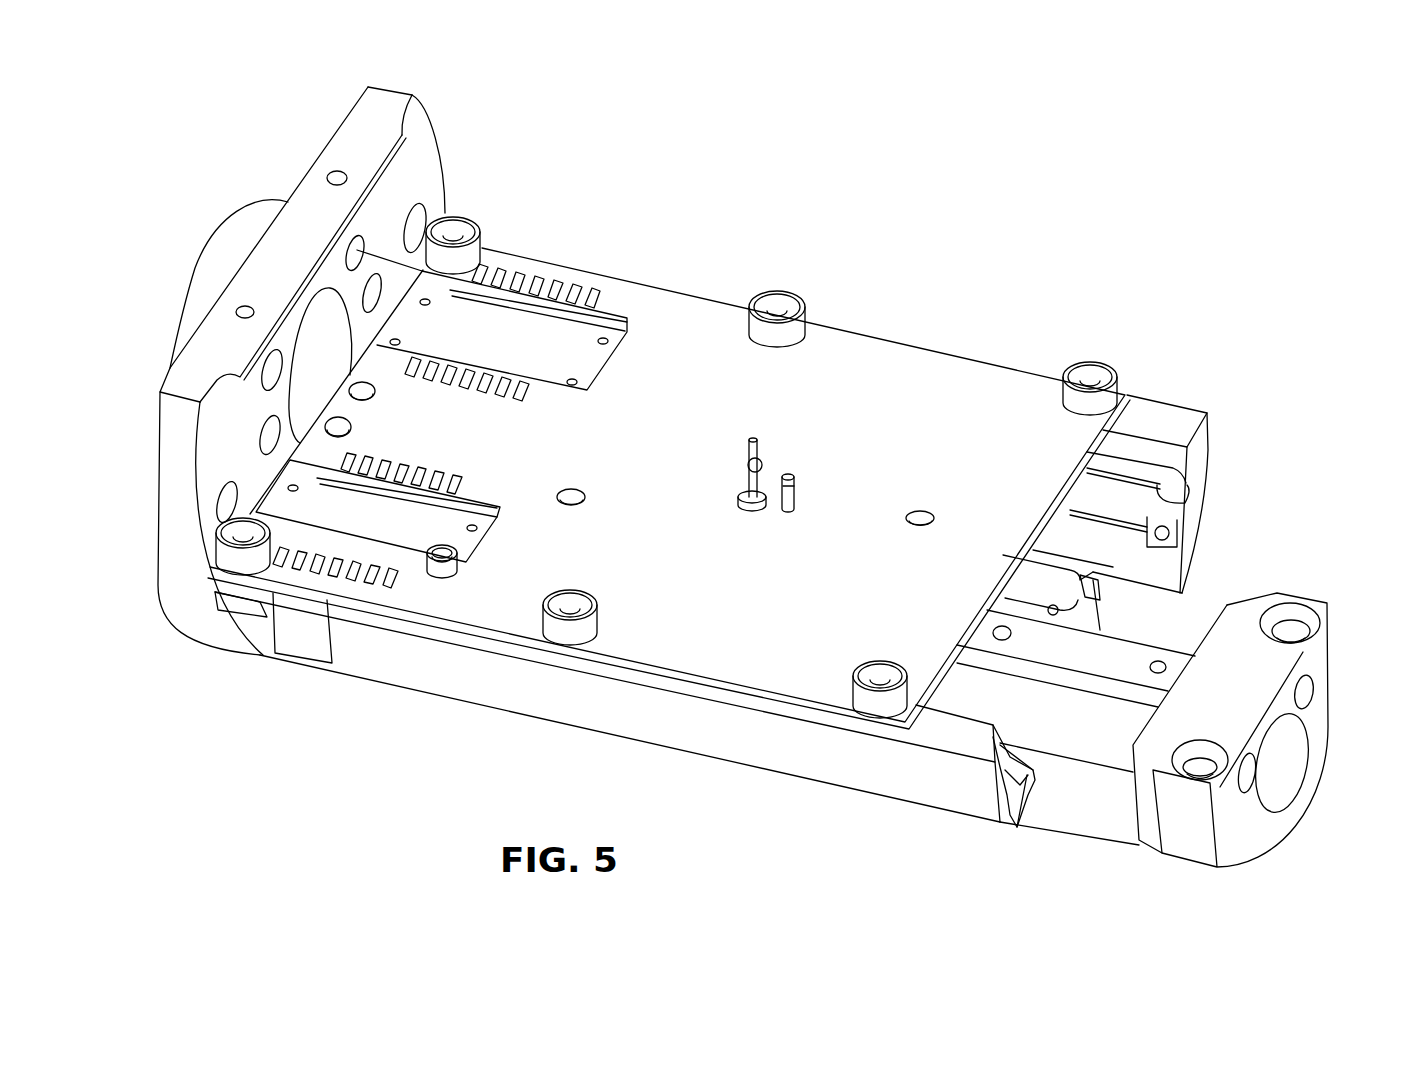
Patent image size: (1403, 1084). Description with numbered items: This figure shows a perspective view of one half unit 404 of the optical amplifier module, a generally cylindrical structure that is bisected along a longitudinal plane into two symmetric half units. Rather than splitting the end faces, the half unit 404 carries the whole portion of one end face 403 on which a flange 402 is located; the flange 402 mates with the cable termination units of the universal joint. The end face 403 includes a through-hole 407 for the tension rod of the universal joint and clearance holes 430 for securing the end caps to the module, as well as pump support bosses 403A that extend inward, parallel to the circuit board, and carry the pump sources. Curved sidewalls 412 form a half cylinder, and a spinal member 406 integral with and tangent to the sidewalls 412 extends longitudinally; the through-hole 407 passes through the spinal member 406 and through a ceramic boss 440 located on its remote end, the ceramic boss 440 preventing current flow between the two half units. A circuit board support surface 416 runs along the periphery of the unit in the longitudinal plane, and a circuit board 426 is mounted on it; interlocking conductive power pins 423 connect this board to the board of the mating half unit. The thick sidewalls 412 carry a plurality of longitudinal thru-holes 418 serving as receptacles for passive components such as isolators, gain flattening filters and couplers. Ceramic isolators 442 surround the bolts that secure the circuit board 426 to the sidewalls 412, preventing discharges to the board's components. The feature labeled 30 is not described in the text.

The hole 30 is at (220, 507).
The flange 402 is at (233, 227).
The end face 403 is at (304, 297).
The pump support boss 403A is at (553, 333).
The half unit 404 is at (745, 195).
The spinal member 406 is at (1107, 797).
The through-hole 407 is at (1275, 792).
The curved sidewall 412 is at (1130, 453).
The circuit board support surface 416 is at (1190, 418).
The thru-hole 418 is at (1173, 465).
The interlocking conductive power pin 423 is at (748, 457).
The circuit board 426 is at (913, 357).
The clearance hole 430 is at (427, 200).
The ceramic boss 440 is at (1256, 759).
The ceramic isolator 442 is at (479, 218).